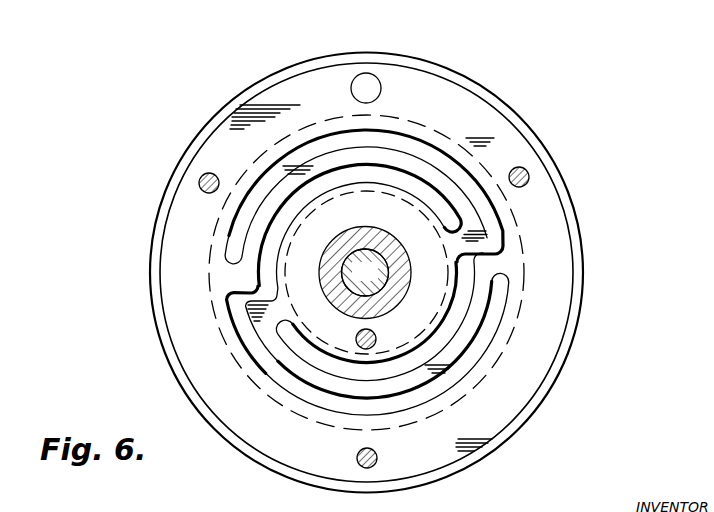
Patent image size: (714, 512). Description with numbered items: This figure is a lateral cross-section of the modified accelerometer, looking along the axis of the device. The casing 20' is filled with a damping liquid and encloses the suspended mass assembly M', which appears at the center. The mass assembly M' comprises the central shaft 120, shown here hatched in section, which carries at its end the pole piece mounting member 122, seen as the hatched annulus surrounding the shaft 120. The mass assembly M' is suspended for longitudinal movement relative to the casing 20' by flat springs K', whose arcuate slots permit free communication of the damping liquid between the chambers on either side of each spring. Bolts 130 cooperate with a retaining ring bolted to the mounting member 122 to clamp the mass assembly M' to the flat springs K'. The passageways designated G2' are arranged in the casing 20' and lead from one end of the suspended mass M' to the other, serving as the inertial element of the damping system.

The casing 20' is at (370, 273).
The inertial element passageways G2' is at (391, 64).
The central shaft 120 is at (351, 254).
The pole piece mounting member 122 is at (386, 243).
The mass assembly M' is at (365, 271).
The flat springs K' is at (344, 269).
The bolts 130 is at (375, 333).